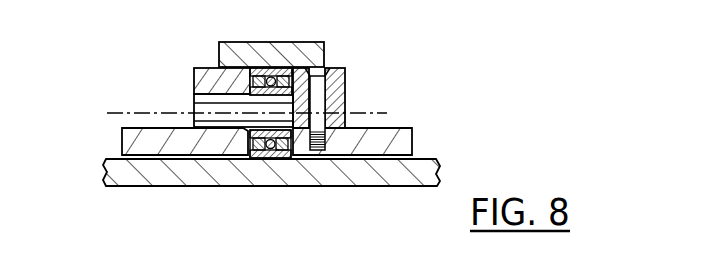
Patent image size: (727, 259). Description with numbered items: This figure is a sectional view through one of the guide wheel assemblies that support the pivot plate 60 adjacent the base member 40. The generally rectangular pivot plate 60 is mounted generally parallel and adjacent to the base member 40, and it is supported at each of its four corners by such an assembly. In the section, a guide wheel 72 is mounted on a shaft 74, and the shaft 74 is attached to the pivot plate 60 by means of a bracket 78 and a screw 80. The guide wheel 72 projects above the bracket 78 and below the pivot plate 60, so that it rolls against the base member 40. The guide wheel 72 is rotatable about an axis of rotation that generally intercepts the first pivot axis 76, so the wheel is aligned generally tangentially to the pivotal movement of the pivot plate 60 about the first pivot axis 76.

The base member 40 is at (362, 176).
The pivot plate 60 is at (407, 143).
The guide wheel 72 is at (272, 67).
The shaft 74 is at (197, 97).
The first pivot axis 76 is at (378, 111).
The bracket 78 is at (193, 68).
The screw 80 is at (327, 68).